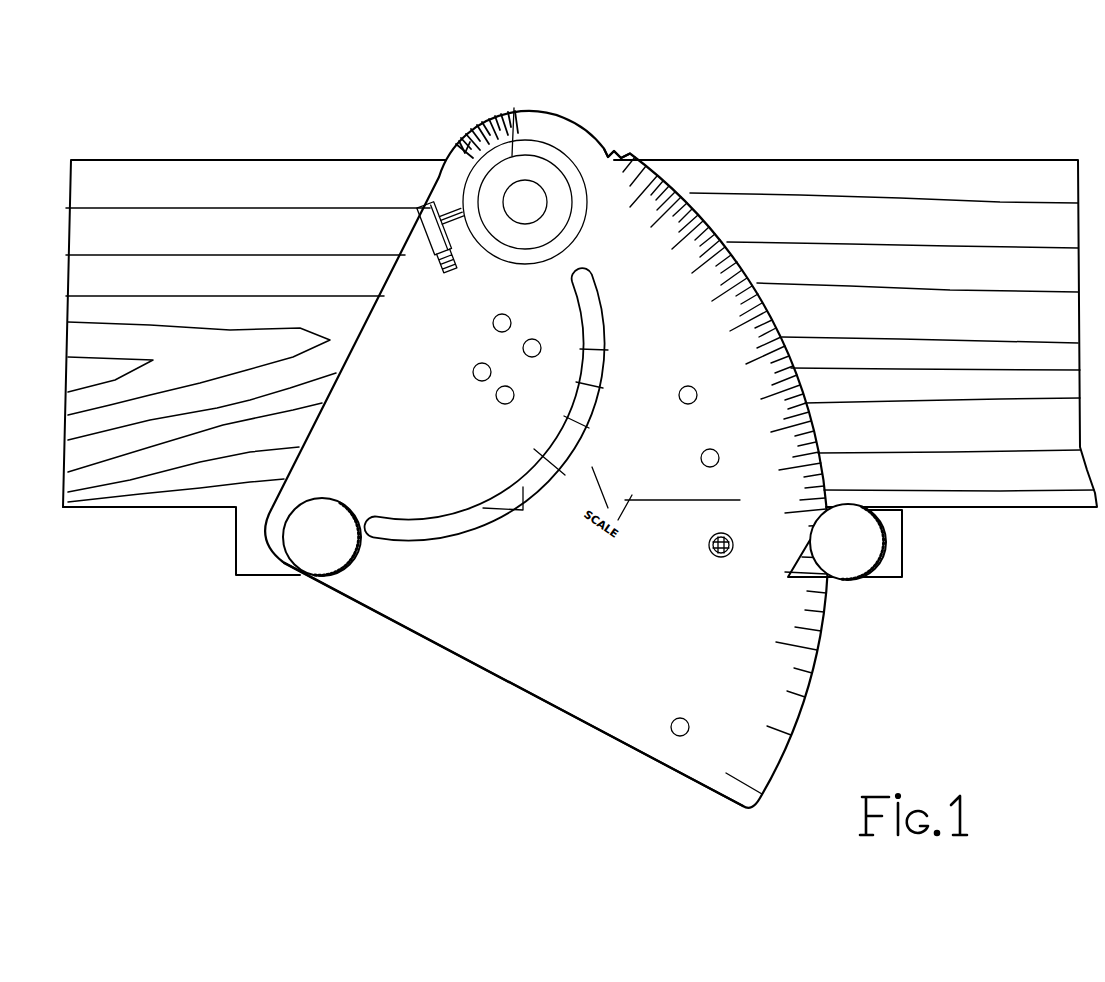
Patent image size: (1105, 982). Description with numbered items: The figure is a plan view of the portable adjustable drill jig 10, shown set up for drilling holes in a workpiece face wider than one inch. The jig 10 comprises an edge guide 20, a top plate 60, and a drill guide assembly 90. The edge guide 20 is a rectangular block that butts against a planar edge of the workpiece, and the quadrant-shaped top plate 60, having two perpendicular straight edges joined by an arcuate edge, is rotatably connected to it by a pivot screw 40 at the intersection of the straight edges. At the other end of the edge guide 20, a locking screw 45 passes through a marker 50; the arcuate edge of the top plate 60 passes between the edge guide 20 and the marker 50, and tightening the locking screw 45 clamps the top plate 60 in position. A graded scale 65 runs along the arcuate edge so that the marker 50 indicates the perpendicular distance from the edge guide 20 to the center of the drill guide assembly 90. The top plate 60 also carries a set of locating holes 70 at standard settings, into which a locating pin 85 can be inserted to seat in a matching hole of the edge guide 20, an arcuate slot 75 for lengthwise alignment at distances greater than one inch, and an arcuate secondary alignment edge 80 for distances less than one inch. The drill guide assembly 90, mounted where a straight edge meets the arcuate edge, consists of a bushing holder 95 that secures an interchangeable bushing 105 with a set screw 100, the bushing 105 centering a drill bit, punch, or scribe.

The jig 10 is at (643, 73).
The edge guide 20 is at (234, 548).
The pivot screw 40 is at (280, 556).
The locking screw 45 is at (888, 542).
The marker 50 is at (825, 590).
The top plate 60 is at (423, 650).
The graded scale 65 is at (678, 245).
The locating holes 70 is at (476, 366).
The arcuate slot 75 is at (405, 542).
The arcuate secondary alignment edge 80 is at (612, 153).
The locating pin 85 is at (723, 558).
The drill guide assembly 90 is at (461, 143).
The bushing holder 95 is at (466, 103).
The set screw 100 is at (442, 207).
The bushing 105 is at (522, 102).